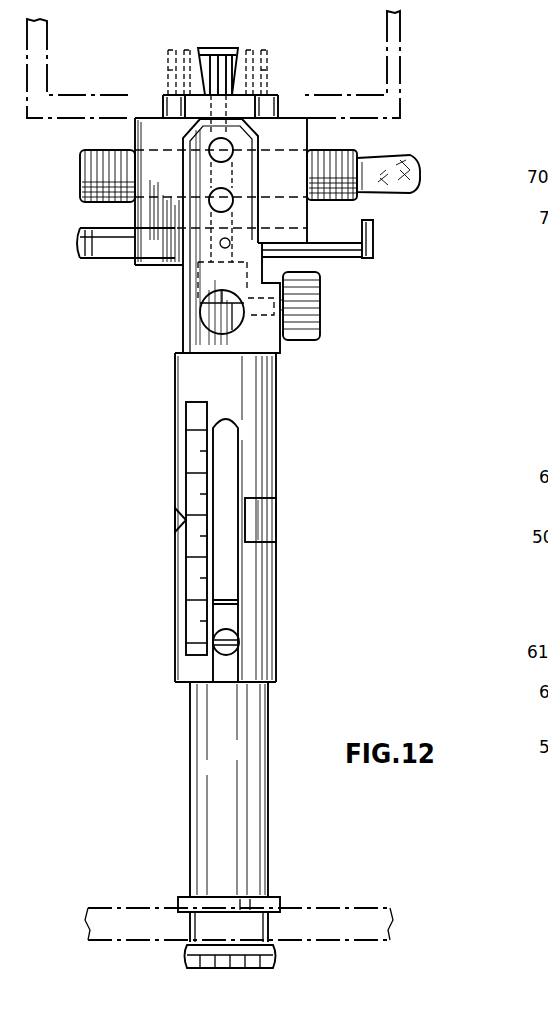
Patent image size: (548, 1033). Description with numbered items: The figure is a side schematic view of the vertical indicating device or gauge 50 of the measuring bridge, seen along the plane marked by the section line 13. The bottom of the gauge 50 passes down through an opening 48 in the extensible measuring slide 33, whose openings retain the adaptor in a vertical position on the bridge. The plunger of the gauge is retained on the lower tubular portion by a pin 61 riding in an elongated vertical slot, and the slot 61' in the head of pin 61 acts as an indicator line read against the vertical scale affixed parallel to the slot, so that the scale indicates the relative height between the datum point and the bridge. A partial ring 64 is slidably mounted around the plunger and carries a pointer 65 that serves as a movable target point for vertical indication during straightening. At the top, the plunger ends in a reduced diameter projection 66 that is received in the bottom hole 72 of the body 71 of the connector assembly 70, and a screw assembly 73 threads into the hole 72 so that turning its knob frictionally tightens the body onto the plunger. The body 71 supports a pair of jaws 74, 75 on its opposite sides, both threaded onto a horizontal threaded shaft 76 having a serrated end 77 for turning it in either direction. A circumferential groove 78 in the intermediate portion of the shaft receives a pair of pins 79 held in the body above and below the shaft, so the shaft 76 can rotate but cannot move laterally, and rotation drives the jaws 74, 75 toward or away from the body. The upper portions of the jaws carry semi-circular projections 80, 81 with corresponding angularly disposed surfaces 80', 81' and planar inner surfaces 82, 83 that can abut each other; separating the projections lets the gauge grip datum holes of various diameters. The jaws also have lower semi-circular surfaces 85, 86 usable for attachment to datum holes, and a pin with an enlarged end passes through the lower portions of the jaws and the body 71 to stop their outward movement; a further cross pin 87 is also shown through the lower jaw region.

The section line 13 is at (218, 40).
The extensible measuring slide 33 is at (113, 906).
The opening 48 is at (277, 933).
The vertical measuring adaptor indicator or gauge 50 is at (276, 590).
The pin 61 is at (285, 650).
The slot of pin head 61' is at (179, 554).
The partial ring 64 is at (273, 523).
The pointer 65 is at (184, 515).
The reduced diameter projection 66 is at (208, 337).
The connector assembly 70 is at (292, 233).
The body 71 is at (212, 265).
The bottom hole 72 is at (240, 345).
The screw assembly 73 is at (322, 315).
The jaw 74 is at (295, 130).
The jaw 75 is at (152, 157).
The horizontal threaded shaft 76 is at (355, 155).
The serrated end 77 is at (405, 178).
The circumferential groove 78 is at (208, 186).
The pin 79 is at (215, 208).
The semi-circular projection 80 is at (274, 55).
The angular disposed surface 80' is at (297, 65).
The semi-circular projection 81 is at (142, 55).
The angular disposed surface 81' is at (147, 56).
The planar inner surface 82 is at (243, 55).
The planar inner surface 83 is at (188, 55).
The lower semi-circular surface 85 is at (165, 97).
The lower semi-circular surface 86 is at (275, 97).
The cross rod 87 is at (368, 237).